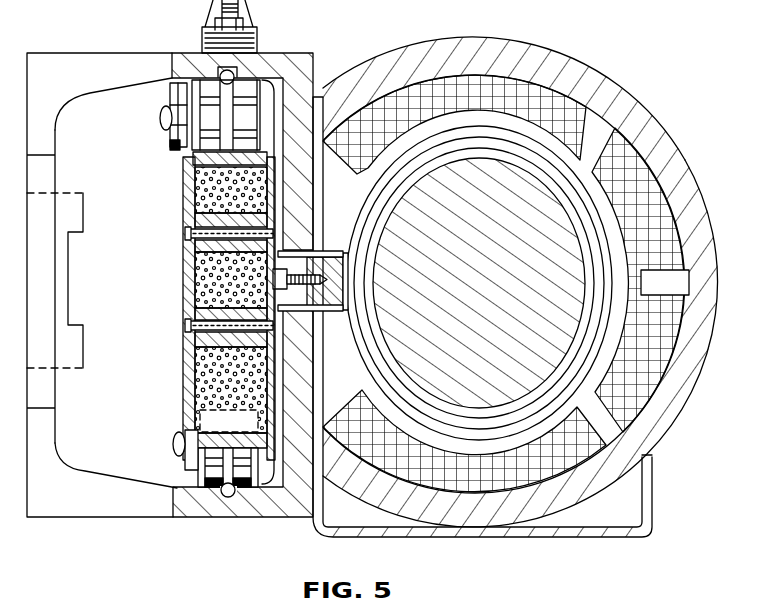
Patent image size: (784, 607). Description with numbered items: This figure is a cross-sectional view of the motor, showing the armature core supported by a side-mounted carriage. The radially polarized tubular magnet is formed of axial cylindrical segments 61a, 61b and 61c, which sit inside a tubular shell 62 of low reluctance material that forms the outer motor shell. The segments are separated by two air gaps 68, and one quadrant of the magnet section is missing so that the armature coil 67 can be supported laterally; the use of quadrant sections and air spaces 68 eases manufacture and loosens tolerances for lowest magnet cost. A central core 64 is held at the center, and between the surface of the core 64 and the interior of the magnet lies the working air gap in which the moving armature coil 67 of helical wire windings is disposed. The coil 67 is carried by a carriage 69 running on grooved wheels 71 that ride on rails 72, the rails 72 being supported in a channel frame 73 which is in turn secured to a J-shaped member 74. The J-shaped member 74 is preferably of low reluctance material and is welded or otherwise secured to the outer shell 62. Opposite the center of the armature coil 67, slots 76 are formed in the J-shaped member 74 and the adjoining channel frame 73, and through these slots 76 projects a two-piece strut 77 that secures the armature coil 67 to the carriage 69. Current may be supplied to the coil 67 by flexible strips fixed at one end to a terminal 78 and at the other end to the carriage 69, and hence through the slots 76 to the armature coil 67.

The axial cylindrical segment 61a is at (582, 61).
The axial cylindrical segment 61b is at (667, 202).
The axial cylindrical segment 61c is at (505, 532).
The tubular shell 62 is at (679, 163).
The central core 64 is at (507, 388).
The armature coil 67 is at (455, 153).
The air gap 68 is at (614, 128).
The carriage 69 is at (183, 412).
The grooved wheel 71 is at (210, 470).
The rail 72 is at (226, 498).
The channel frame 73 is at (294, 62).
The J-shaped member 74 is at (318, 206).
The slot 76 is at (294, 262).
The two-piece strut 77 is at (332, 329).
The terminal 78 is at (246, 14).